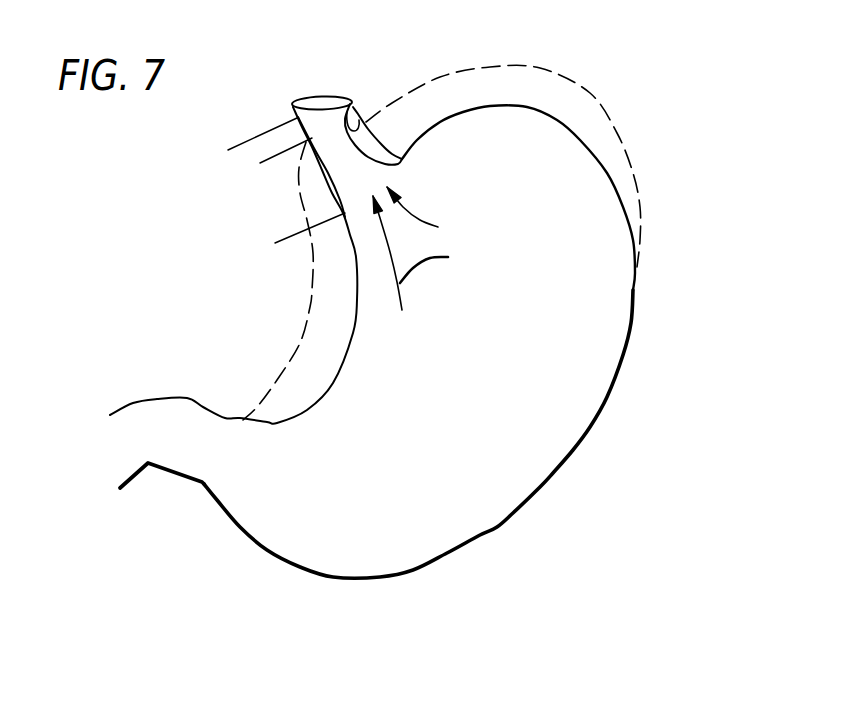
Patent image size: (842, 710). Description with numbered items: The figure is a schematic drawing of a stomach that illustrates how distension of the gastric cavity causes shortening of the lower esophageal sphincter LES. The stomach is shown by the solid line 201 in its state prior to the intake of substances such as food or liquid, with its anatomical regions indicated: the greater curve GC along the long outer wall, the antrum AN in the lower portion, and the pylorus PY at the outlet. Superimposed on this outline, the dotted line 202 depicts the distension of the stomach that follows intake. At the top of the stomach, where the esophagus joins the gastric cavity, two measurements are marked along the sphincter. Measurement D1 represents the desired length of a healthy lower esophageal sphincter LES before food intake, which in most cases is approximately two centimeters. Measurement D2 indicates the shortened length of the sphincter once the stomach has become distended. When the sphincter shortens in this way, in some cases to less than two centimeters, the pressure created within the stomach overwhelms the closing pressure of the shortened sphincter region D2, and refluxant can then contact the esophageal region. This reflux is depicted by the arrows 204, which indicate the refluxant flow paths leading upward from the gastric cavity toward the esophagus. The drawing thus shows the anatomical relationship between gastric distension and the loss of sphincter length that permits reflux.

The solid line 201 is at (633, 287).
The dotted line 202 is at (617, 135).
The arrows 204 is at (477, 225).
The lower esophageal sphincter LES is at (353, 112).
The pylorus PY is at (207, 403).
The greater curve GC is at (590, 427).
The antrum AN is at (497, 527).
The measurement D1 is at (241, 149).
The measurement D2 is at (227, 72).